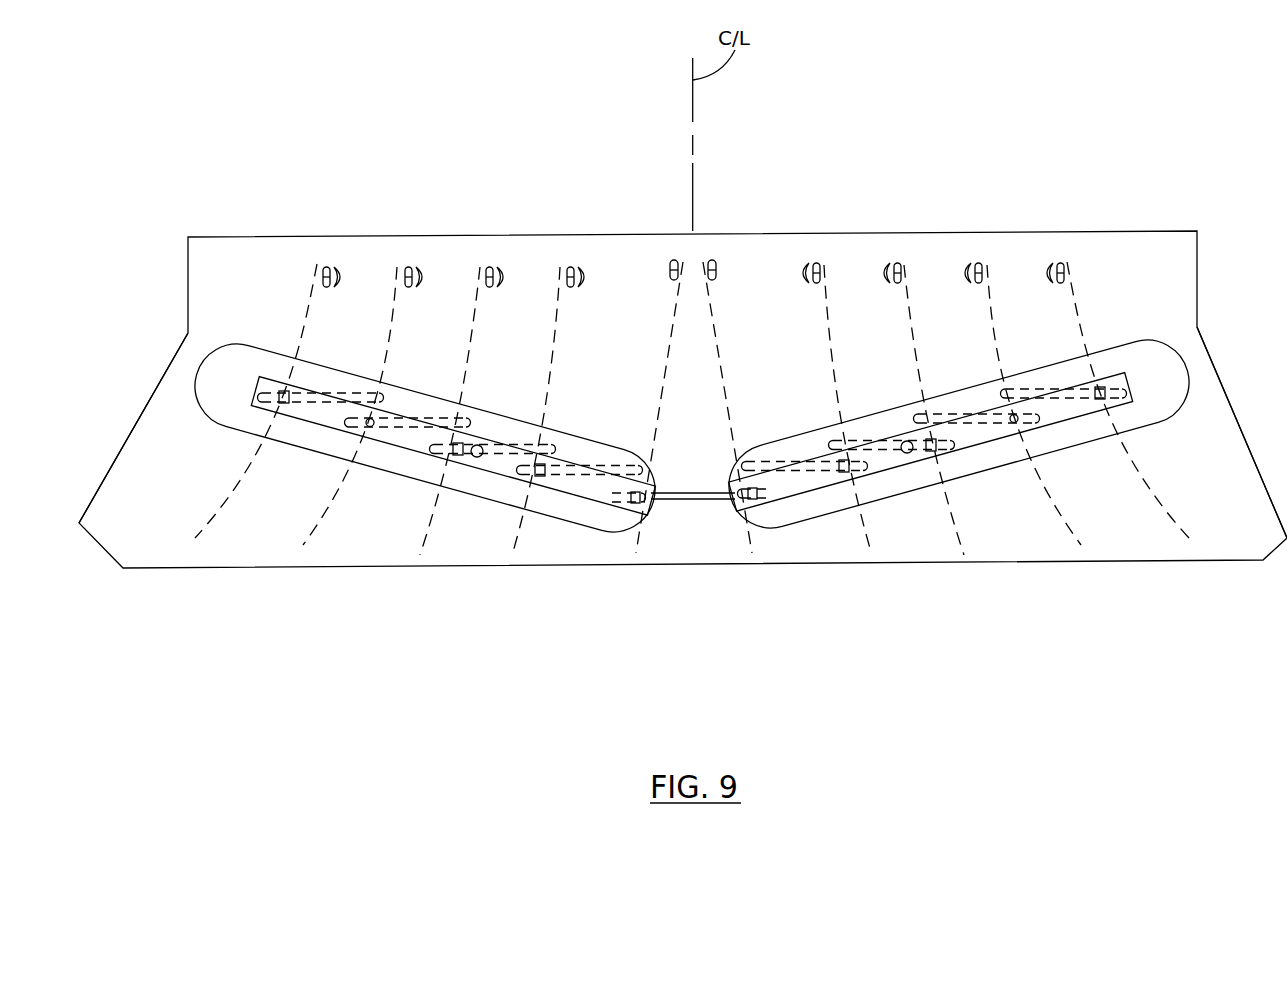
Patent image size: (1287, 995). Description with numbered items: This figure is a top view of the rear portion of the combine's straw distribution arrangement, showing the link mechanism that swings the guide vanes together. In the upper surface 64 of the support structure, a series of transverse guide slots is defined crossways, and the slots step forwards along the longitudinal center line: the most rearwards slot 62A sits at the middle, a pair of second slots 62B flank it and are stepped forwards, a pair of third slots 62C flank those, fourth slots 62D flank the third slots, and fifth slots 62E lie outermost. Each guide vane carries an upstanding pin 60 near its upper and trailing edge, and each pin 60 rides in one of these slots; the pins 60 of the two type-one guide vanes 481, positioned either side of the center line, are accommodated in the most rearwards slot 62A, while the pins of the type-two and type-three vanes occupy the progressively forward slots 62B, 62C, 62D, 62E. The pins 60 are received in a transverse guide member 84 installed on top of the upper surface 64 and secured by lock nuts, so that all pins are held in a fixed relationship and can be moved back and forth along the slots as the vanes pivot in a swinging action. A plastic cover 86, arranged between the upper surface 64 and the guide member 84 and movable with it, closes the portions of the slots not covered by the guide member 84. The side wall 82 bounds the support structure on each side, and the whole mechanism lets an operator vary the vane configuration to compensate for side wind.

The upstanding pin 60 is at (1015, 414).
The most rearwards guide slot 62A is at (663, 500).
The second slots 62B is at (737, 468).
The third slots 62C is at (862, 437).
The fourth slots 62D is at (925, 413).
The fifth slots 62E is at (1102, 388).
The upper surface 64 is at (1218, 457).
The side wall 82 is at (138, 417).
The transverse guide member 84 is at (490, 474).
The plastic cover 86 is at (562, 518).
The type 1 guide vanes 481 is at (750, 537).